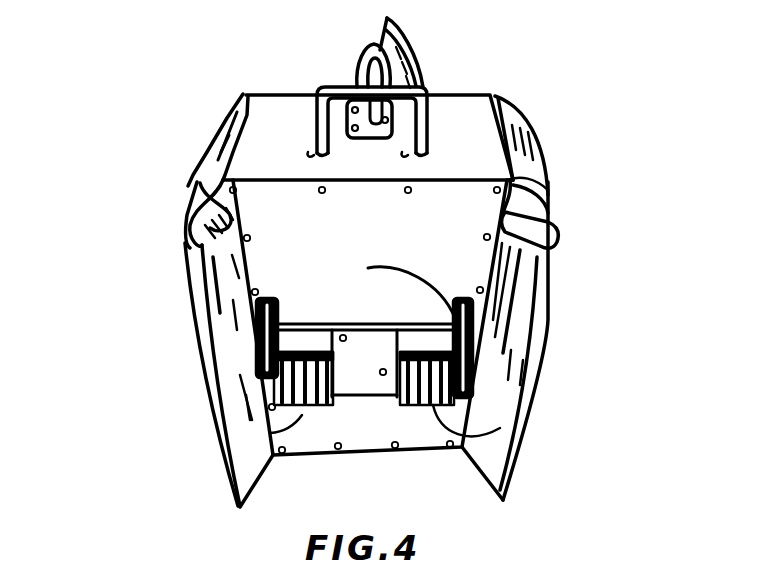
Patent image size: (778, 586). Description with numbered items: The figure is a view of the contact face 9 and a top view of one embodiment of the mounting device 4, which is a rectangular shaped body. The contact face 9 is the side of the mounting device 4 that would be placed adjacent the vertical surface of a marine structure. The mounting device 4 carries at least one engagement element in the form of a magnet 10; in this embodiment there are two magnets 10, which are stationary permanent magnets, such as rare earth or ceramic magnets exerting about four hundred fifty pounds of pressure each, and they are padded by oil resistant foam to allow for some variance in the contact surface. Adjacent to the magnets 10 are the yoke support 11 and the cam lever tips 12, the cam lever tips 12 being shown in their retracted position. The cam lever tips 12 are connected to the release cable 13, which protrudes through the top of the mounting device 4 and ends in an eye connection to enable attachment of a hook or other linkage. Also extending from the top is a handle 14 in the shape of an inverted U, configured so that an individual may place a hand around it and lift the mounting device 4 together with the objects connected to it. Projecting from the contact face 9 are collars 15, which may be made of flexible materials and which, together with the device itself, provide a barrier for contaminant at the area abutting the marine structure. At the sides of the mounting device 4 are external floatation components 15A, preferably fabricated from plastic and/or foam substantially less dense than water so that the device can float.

The mounting device 4 is at (485, 95).
The contact face 9 is at (478, 218).
The magnet 10 is at (270, 433).
The yoke support 11 is at (280, 312).
The cam lever tips 12 is at (258, 327).
The release cable 13 is at (362, 50).
The handle 14 is at (317, 90).
The collars 15 is at (185, 271).
The external floatation component 15A is at (533, 124).